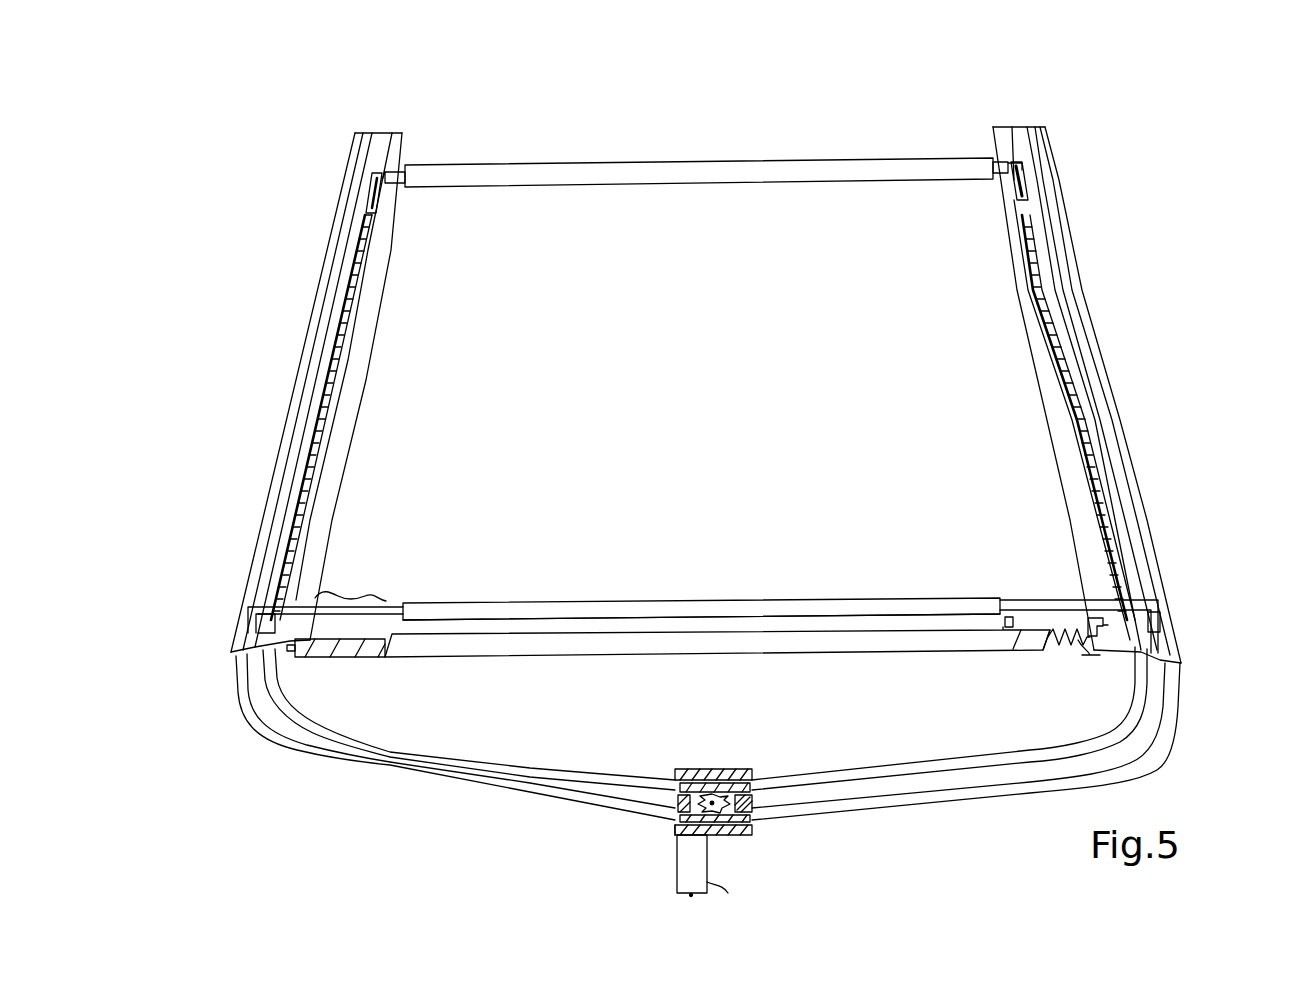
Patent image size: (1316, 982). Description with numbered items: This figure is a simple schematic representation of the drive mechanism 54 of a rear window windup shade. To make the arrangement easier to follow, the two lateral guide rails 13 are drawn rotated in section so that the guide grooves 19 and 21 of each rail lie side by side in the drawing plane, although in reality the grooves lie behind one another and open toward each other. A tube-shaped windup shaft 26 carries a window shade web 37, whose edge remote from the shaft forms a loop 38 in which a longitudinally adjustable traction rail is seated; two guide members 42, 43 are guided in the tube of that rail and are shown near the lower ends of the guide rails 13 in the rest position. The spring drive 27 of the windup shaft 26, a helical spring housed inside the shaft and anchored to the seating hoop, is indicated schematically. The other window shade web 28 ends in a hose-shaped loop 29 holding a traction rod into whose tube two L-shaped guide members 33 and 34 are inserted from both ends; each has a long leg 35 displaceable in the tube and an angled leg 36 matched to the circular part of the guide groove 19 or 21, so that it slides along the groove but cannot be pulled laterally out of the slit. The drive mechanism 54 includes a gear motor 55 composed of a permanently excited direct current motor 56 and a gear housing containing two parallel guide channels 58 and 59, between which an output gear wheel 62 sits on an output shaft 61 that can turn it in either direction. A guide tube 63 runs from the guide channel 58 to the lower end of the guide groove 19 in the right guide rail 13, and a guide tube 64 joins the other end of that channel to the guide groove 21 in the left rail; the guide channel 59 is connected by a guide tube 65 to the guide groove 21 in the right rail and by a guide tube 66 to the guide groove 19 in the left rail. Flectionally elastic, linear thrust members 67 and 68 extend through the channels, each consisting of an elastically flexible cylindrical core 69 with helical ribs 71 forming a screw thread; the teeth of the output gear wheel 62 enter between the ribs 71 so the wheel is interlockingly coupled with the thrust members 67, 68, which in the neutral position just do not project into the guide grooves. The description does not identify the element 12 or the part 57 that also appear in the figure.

The sunroof assembly 12 is at (1193, 220).
The guide rail 13 is at (300, 340).
The guide groove 19 is at (392, 140).
The guide groove 21 is at (368, 142).
The windup shaft 26 is at (312, 660).
The spring drive 27 is at (1073, 642).
The window shade web 28 is at (716, 418).
The hose-shaped loop 29 is at (688, 170).
The guide member 33 is at (410, 150).
The guide member 34 is at (985, 144).
The long leg 35 is at (400, 190).
The angled leg 36 is at (372, 196).
The window shade web 37 is at (500, 627).
The loop 38 is at (680, 605).
The guide member 42 is at (380, 585).
The guide member 43 is at (1021, 575).
The drive mechanism 54 is at (800, 742).
The gear motor 55 is at (645, 838).
The direct current motor 56 is at (693, 851).
The bottom plate 57 is at (753, 825).
The guide channel 58 is at (703, 768).
The guide channel 59 is at (680, 834).
The output shaft 61 is at (686, 769).
The output gear wheel 62 is at (753, 806).
The guide tube 63 is at (915, 766).
The guide tube 64 is at (568, 772).
The guide tube 65 is at (935, 800).
The guide tube 66 is at (556, 793).
The thrust member 67 is at (1090, 422).
The thrust member 68 is at (328, 412).
The cylindrical core 69 is at (1038, 227).
The ribs 71 is at (1043, 258).